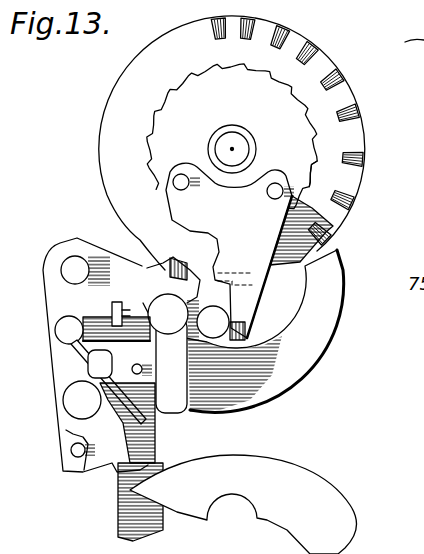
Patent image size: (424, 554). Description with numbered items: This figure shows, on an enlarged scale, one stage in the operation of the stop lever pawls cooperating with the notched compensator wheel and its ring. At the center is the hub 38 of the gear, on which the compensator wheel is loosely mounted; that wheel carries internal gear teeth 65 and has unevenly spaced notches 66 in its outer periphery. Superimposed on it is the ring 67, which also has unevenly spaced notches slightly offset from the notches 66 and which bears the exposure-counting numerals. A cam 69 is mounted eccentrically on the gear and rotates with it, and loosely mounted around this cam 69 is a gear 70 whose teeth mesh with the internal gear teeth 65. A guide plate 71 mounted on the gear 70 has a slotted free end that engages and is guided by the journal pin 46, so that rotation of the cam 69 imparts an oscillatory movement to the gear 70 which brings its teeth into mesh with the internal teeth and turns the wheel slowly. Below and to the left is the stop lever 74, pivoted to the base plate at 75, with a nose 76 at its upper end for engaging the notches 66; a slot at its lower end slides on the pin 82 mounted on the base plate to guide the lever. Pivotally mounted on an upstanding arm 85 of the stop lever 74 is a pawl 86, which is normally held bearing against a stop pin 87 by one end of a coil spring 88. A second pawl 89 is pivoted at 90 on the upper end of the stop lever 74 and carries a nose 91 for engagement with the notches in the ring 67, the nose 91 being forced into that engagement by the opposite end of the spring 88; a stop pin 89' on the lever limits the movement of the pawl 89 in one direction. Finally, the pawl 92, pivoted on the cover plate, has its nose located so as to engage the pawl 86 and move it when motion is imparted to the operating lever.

The hub 38 is at (241, 148).
The journal pin 46 is at (216, 320).
The internal gear teeth 65 is at (309, 172).
The notches 66 is at (334, 232).
The ring 67 is at (329, 97).
The cam 69 is at (232, 147).
The gear 70 is at (284, 145).
The guide plate 71 is at (296, 210).
The stop lever 74 is at (118, 509).
The pivot 75 is at (68, 278).
The nose 76 is at (193, 278).
The pin 82 is at (327, 266).
The upstanding arm 85 is at (83, 432).
The pawl 86 is at (73, 435).
The stop pin 87 is at (78, 452).
The coil spring 88 is at (77, 362).
The pawl 89 is at (176, 370).
The stop pin 89' is at (120, 356).
The pivot 90 is at (165, 305).
The nose 91 is at (165, 277).
The pawl 92 is at (267, 465).